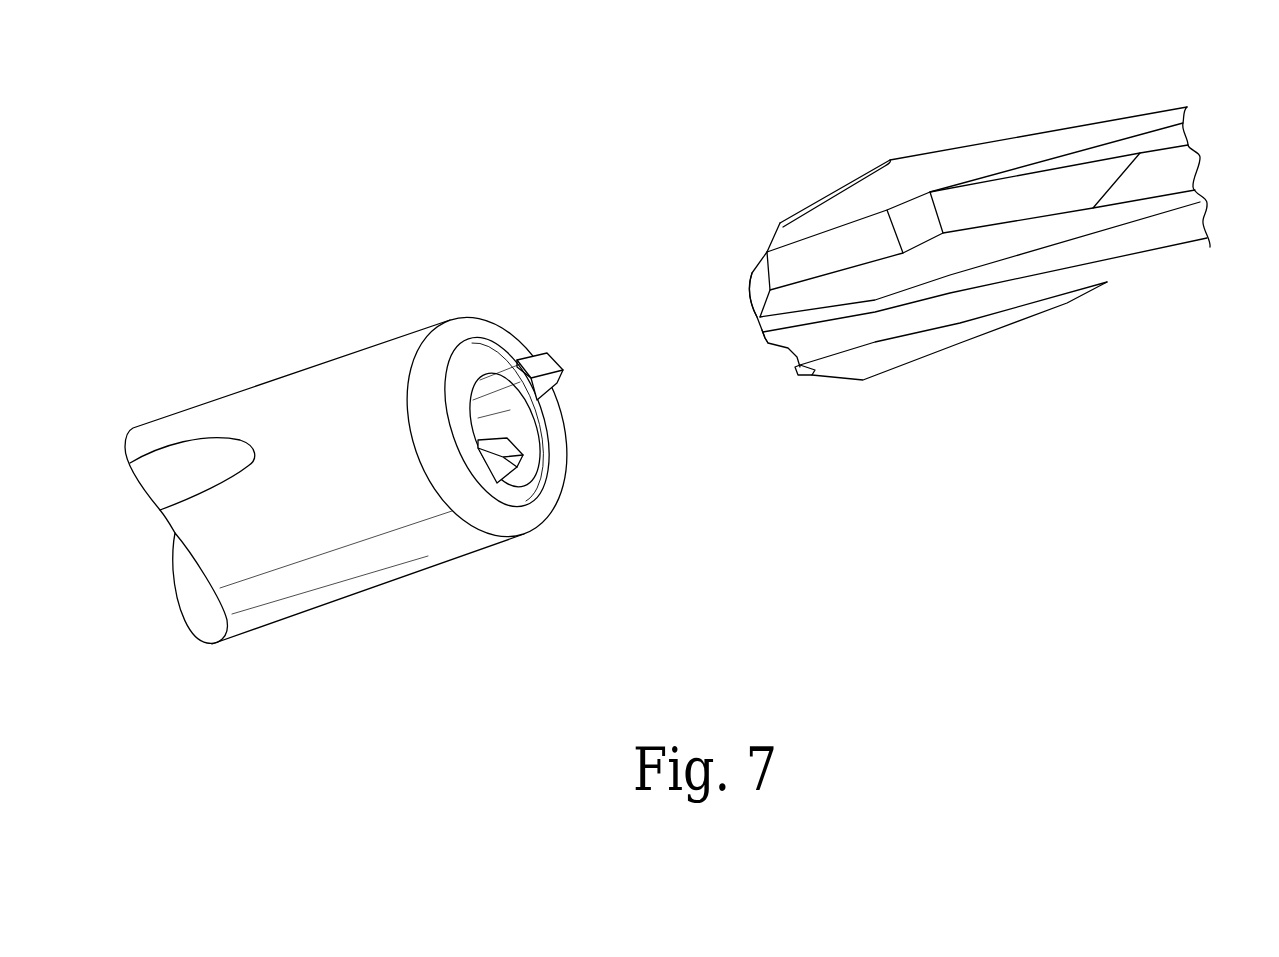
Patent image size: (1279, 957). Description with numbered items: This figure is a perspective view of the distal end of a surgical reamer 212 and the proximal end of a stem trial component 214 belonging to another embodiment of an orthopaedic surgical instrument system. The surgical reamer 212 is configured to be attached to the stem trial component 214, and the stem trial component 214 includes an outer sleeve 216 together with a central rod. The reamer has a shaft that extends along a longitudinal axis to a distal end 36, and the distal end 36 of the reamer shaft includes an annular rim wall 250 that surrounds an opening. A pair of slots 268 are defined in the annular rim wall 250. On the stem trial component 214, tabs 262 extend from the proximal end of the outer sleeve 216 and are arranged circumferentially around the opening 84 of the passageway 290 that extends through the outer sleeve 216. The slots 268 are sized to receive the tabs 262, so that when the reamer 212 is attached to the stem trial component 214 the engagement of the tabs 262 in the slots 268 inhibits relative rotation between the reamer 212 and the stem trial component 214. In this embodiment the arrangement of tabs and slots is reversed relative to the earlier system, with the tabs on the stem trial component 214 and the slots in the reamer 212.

The surgical reamer 212 is at (955, 243).
The stem trial component 214 is at (384, 414).
The outer sleeve 216 is at (392, 570).
The tabs 262 is at (553, 362).
The opening 290 is at (530, 437).
The opening 84 is at (534, 422).
The distal end 36 is at (758, 320).
The annular rim wall 250 is at (765, 338).
The slots 268 is at (793, 362).